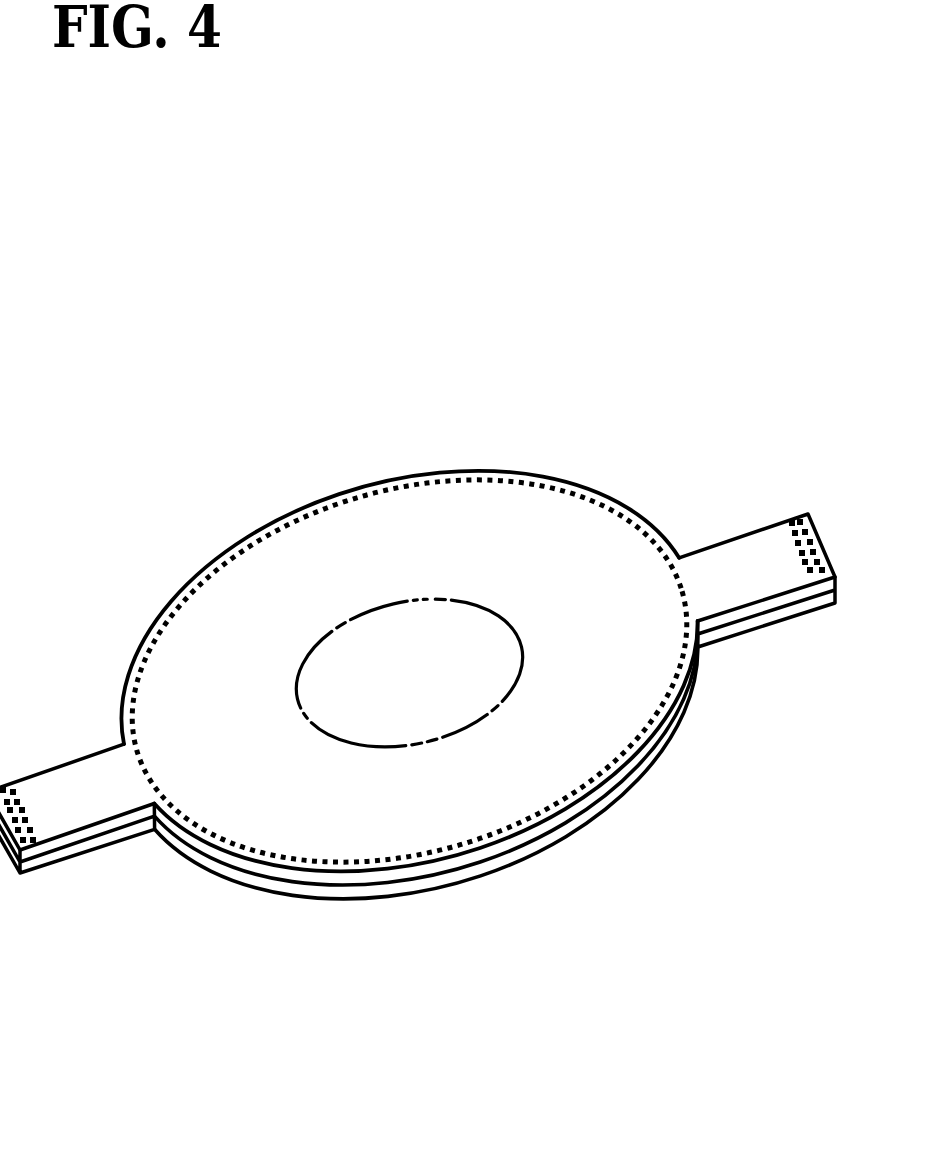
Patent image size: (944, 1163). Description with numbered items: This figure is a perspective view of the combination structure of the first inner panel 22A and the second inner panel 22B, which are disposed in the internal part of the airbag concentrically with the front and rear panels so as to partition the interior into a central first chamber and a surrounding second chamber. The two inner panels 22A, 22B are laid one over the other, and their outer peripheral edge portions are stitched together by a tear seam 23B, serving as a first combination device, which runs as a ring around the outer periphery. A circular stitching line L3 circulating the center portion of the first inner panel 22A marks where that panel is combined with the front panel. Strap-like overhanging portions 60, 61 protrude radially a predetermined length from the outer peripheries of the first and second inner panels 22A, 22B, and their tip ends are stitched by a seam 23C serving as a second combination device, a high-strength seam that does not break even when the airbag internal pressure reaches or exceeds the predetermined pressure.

The first inner panel 22A is at (558, 770).
The second inner panel 22B is at (371, 902).
The tear seam 23B is at (197, 587).
The seam 23C is at (56, 820).
The overhanging portion 60 is at (78, 777).
The overhanging portion 61 is at (48, 868).
The circular stitching line L3 is at (453, 598).